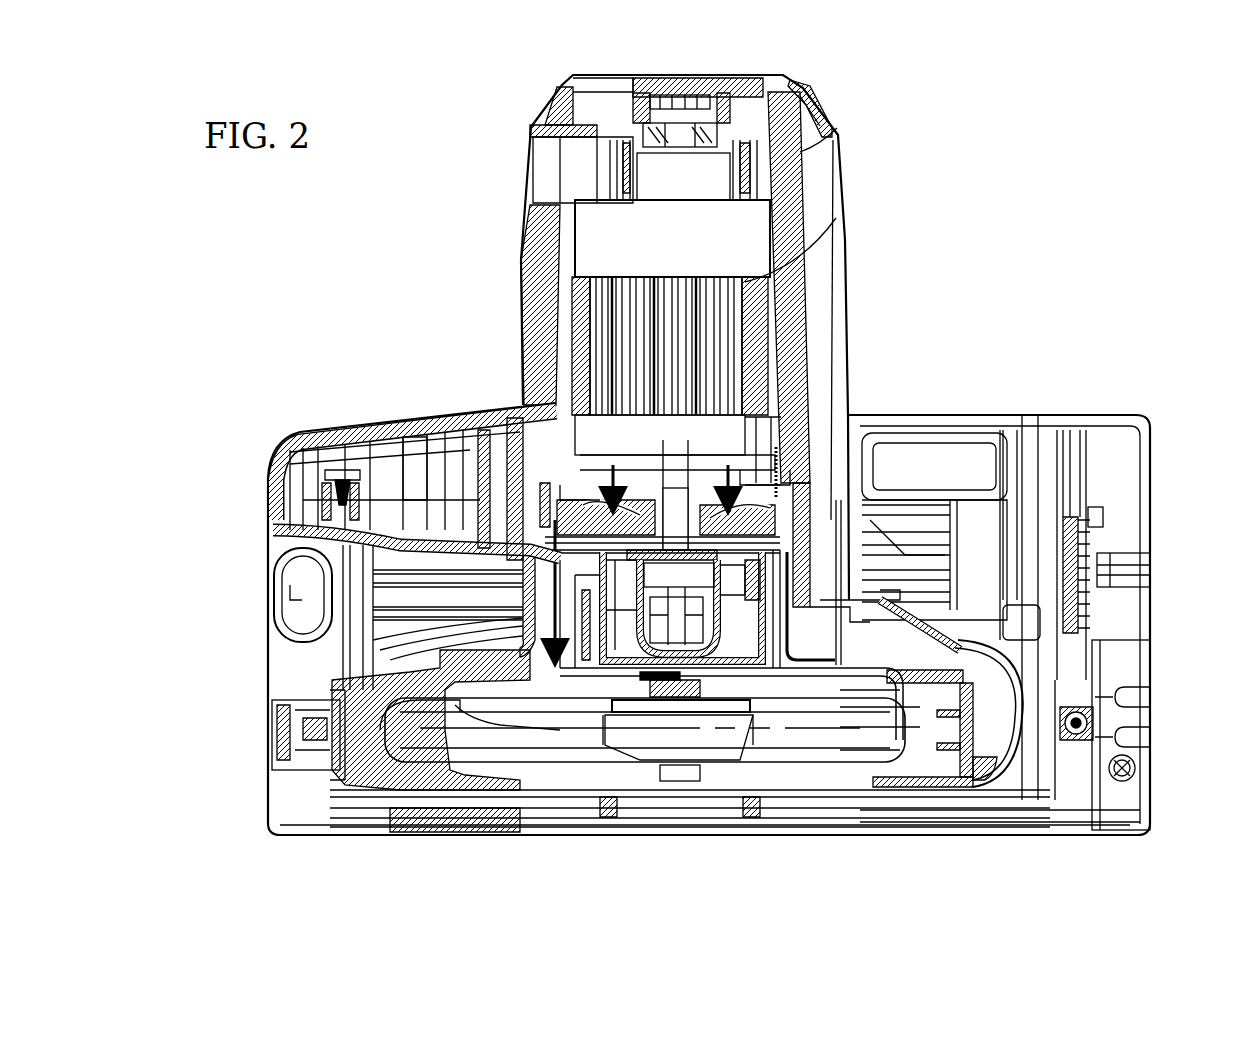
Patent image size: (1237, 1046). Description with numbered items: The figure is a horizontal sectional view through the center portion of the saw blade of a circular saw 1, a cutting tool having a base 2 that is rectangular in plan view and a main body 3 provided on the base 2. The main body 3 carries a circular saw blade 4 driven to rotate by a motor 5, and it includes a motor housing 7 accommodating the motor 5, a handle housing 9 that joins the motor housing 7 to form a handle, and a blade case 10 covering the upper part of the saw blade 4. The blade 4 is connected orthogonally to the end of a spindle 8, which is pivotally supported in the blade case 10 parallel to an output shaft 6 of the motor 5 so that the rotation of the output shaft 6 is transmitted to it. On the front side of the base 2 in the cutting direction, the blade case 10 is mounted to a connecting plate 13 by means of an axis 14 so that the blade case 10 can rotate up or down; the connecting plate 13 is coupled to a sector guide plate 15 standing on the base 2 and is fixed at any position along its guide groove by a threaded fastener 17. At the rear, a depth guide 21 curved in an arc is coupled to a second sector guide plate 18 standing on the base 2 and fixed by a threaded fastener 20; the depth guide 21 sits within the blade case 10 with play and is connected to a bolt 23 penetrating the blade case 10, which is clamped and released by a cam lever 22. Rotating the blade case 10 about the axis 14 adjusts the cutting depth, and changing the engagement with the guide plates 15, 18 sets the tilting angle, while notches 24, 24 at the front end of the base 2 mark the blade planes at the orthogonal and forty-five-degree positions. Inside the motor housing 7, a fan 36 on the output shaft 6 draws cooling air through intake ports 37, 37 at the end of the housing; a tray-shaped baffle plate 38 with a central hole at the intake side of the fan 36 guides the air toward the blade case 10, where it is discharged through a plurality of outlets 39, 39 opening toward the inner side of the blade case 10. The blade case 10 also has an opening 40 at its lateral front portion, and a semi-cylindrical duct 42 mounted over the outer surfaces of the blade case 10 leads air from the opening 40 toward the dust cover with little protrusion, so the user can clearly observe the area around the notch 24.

The circular saw 1 is at (975, 225).
The base 2 is at (1108, 455).
The main body 3 is at (852, 318).
The circular saw blade 4 is at (879, 790).
The motor 5 is at (785, 238).
The output shaft 6 is at (668, 700).
The motor housing 7 is at (812, 110).
The spindle 8 is at (703, 725).
The handle housing 9 is at (285, 505).
The blade case 10 is at (372, 795).
The connecting plate 13 is at (1132, 662).
The axis 14 is at (1012, 605).
The sector guide plate 15 is at (1058, 560).
The threaded fastener 17 is at (1120, 560).
The sector guide plate 18 is at (310, 525).
The threaded fastener 20 is at (298, 592).
The depth guide 21 is at (405, 805).
The cam lever 22 is at (290, 716).
The bolt 23 is at (335, 790).
The notches 24 is at (1150, 704).
The fan 36 is at (600, 520).
The intake ports 37 is at (619, 74).
The baffle plate 38 is at (803, 492).
The outlets 39 is at (560, 700).
The opening 40 is at (870, 545).
The semi-cylindrical duct 42 is at (970, 600).